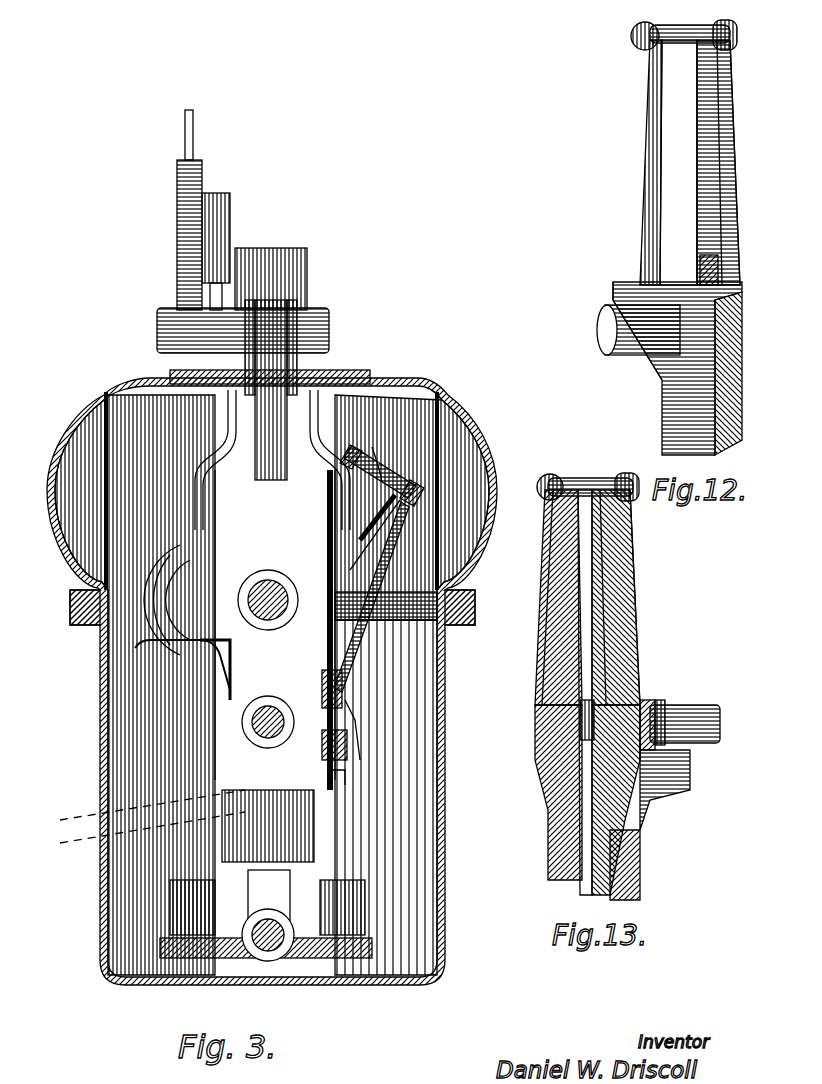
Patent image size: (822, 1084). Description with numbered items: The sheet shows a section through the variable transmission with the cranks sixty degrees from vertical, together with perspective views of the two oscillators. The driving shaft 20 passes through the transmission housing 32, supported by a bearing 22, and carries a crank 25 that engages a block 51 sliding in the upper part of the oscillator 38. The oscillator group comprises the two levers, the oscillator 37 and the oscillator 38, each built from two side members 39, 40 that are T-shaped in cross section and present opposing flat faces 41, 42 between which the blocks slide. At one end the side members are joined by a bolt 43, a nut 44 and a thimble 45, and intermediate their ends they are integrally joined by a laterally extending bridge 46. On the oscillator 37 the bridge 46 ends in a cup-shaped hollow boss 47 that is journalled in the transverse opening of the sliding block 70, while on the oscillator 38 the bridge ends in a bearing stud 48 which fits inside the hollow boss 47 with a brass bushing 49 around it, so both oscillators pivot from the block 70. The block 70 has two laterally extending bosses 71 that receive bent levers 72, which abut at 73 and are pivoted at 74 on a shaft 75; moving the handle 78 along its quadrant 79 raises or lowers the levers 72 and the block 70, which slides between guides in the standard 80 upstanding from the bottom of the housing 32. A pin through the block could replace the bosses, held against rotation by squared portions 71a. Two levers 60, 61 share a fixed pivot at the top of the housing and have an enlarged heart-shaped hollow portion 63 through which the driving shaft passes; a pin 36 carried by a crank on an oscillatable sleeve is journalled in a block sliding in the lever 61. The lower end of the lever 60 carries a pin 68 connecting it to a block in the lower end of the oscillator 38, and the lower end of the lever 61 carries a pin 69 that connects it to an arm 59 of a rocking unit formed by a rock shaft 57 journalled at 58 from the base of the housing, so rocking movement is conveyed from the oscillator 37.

In FIG. 3, the driving shaft 20 is at (160, 580).
In FIG. 3, the bearing 22 is at (200, 525).
In FIG. 3, the crank 25 is at (190, 665).
In FIG. 3, the transmission housing 32 is at (145, 380).
In FIG. 3, the pin 36 is at (415, 490).
In FIG. 3, the oscillator 37 is at (420, 574).
In FIG. 13, the oscillator 37 is at (620, 845).
In FIG. 3, the oscillator 38 is at (290, 888).
In FIG. 12, the oscillator 38 is at (665, 410).
In FIG. 12, the side member 39 is at (645, 240).
In FIG. 13, the side member 39 is at (540, 710).
In FIG. 12, the side member 40 is at (735, 222).
In FIG. 13, the side member 40 is at (635, 690).
In FIG. 3, the flat face 41 is at (375, 550).
In FIG. 12, the flat face 41 is at (652, 132).
In FIG. 13, the flat face 41 is at (555, 642).
In FIG. 3, the flat face 42 is at (380, 530).
In FIG. 12, the flat face 42 is at (700, 150).
In FIG. 13, the flat face 42 is at (590, 630).
In FIG. 12, the bolt 43 is at (730, 34).
In FIG. 13, the bolt 43 is at (545, 480).
In FIG. 12, the nut 44 is at (640, 25).
In FIG. 13, the nut 44 is at (628, 478).
In FIG. 3, the thimble 45 is at (381, 454).
In FIG. 12, the thimble 45 is at (690, 28).
In FIG. 13, the thimble 45 is at (588, 478).
In FIG. 12, the bridge 46 is at (712, 268).
In FIG. 13, the bridge 46 is at (585, 712).
In FIG. 3, the hollow boss 47 is at (240, 750).
In FIG. 13, the hollow boss 47 is at (655, 705).
In FIG. 3, the bearing stud 48 is at (220, 712).
In FIG. 12, the bearing stud 48 is at (600, 340).
In FIG. 13, the bearing stud 48 is at (712, 720).
In FIG. 3, the bushing 49 is at (350, 755).
In FIG. 13, the bushing 49 is at (668, 708).
In FIG. 3, the block 51 is at (420, 632).
In FIG. 3, the rock shaft 57 is at (268, 965).
In FIG. 3, the journal 58 is at (250, 958).
In FIG. 3, the arm 59 is at (269, 900).
In FIG. 3, the lever 60 is at (100, 420).
In FIG. 3, the lever 61 is at (430, 460).
In FIG. 3, the enlarged hollow central portion 63 is at (100, 600).
In FIG. 3, the pin 68 is at (137, 833).
In FIG. 3, the pin 69 is at (138, 811).
In FIG. 3, the sliding block 70 is at (280, 840).
In FIG. 3, the boss 71 is at (345, 680).
In FIG. 3, the squared portion 71a is at (350, 710).
In FIG. 3, the bent lever 72 is at (200, 505).
In FIG. 3, the abutment 73 is at (330, 380).
In FIG. 3, the pivot 74 is at (300, 312).
In FIG. 3, the shaft 75 is at (325, 335).
In FIG. 3, the handle 78 is at (178, 185).
In FIG. 3, the quadrant 79 is at (225, 240).
In FIG. 3, the standard 80 is at (205, 740).